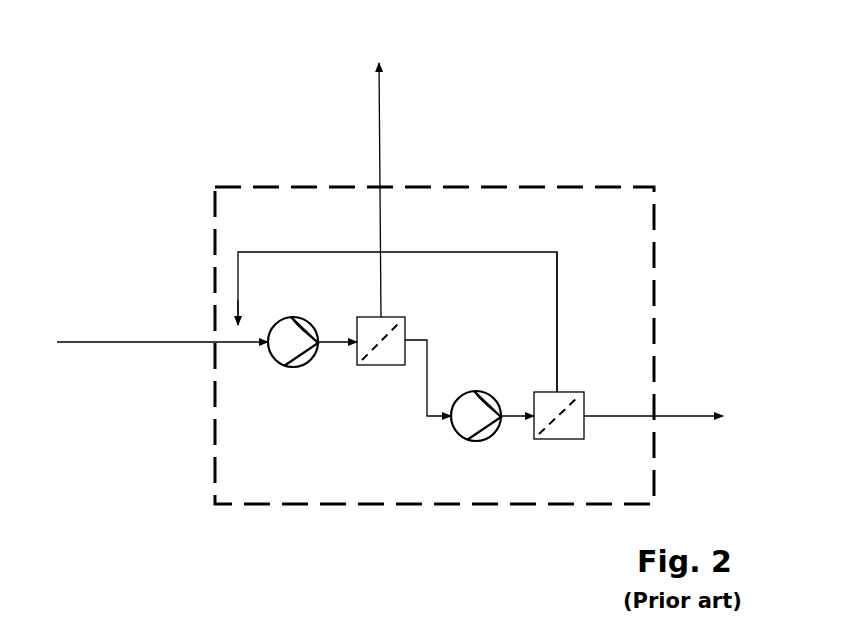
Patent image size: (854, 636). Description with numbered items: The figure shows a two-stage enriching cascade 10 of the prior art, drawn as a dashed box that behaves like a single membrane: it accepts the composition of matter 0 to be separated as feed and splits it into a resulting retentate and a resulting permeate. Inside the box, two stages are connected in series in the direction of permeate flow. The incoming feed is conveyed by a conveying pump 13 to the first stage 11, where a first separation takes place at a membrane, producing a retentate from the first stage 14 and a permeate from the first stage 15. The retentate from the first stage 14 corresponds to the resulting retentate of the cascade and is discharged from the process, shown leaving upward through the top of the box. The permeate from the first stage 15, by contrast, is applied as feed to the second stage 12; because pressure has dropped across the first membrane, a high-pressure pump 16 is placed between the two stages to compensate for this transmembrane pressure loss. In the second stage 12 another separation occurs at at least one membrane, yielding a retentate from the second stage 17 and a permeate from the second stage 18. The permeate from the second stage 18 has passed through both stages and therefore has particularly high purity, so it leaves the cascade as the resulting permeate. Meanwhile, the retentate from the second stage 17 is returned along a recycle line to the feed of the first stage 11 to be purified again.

The enriching cascade 10 is at (214, 240).
The composition of matter 0 is at (128, 342).
The conveying pump 13 is at (283, 366).
The first stage 11 is at (380, 366).
The retentate from the first stage 14 is at (380, 287).
The permeate from the first stage 15 is at (427, 380).
The retentate from the second stage 17 is at (557, 299).
The high-pressure pump 16 is at (470, 441).
The second stage 12 is at (559, 440).
The permeate from the second stage 18 is at (632, 416).